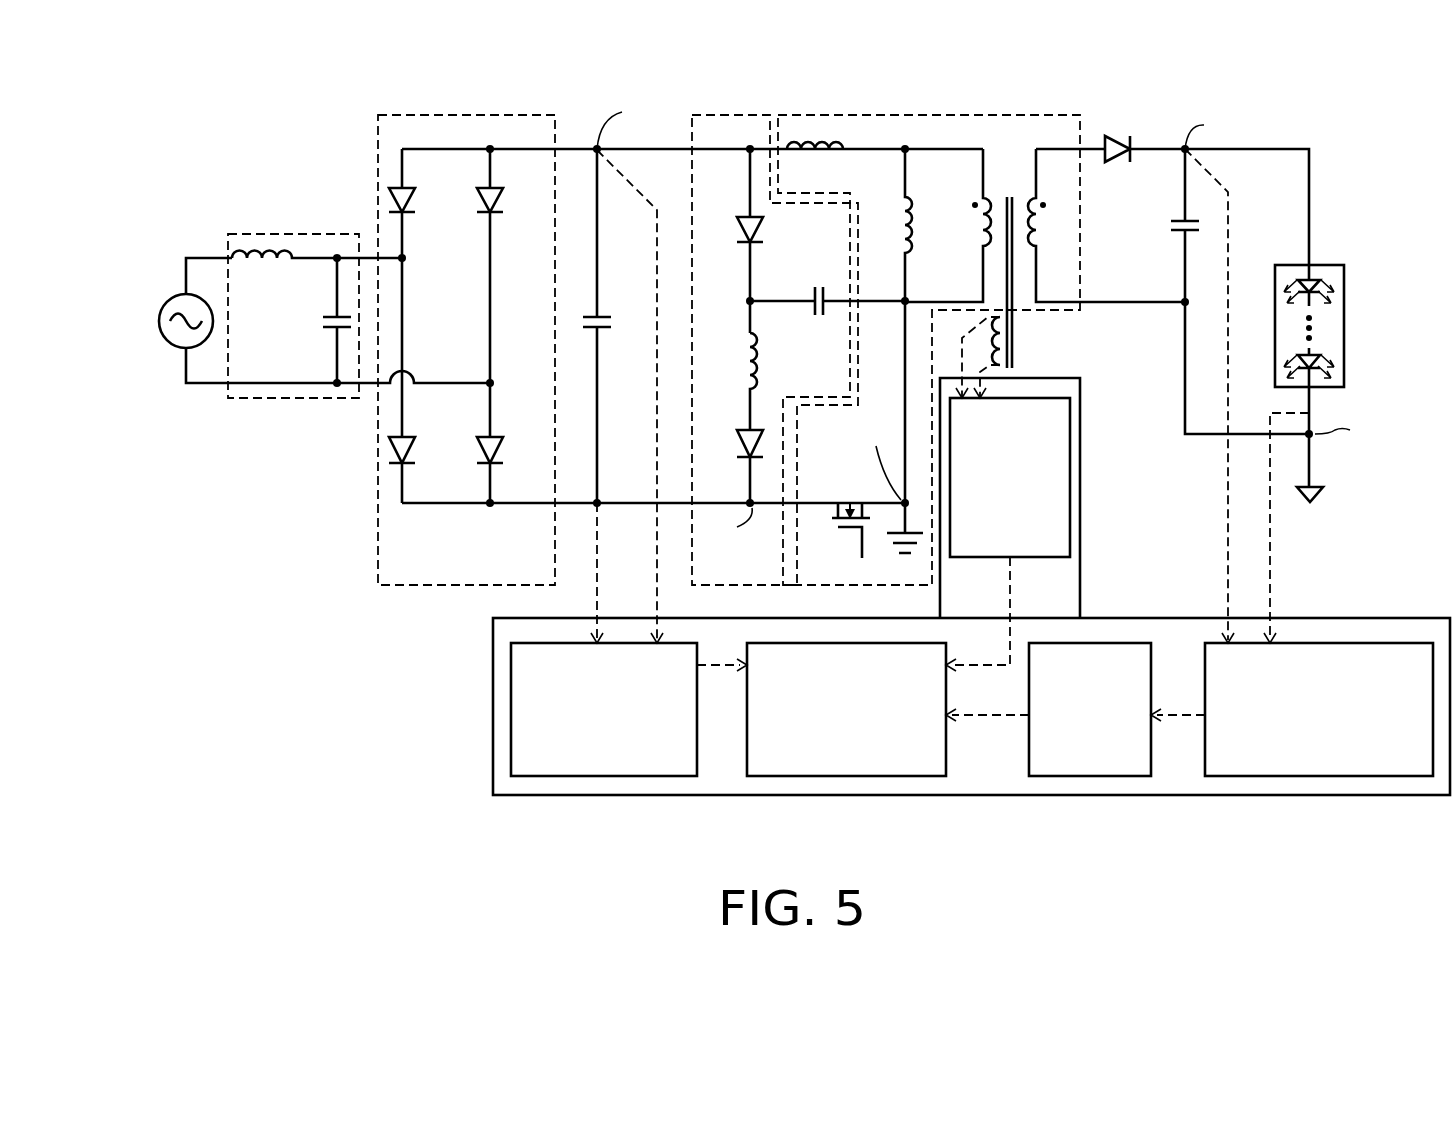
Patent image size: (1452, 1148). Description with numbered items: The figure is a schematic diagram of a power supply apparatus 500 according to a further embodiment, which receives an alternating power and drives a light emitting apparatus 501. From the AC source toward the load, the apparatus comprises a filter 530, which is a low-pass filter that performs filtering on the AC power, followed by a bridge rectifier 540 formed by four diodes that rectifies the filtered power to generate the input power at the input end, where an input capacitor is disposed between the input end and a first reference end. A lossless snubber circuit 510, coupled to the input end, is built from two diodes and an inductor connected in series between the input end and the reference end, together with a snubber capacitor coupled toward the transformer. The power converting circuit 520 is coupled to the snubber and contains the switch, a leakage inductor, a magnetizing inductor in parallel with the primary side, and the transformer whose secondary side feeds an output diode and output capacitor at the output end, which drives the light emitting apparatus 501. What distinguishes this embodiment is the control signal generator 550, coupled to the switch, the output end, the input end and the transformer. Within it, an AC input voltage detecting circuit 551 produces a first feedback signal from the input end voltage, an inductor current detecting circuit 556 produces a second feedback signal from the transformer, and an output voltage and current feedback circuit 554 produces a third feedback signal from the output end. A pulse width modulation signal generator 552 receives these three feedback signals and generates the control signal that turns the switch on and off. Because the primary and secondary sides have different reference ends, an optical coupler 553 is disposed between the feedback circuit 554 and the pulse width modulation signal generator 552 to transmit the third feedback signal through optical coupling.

The power supply apparatus 500 is at (783, 489).
The light emitting apparatus 501 is at (1335, 265).
The lossless snubber circuit 510 is at (737, 114).
The power converting circuit 520 is at (968, 114).
The filter 530 is at (292, 233).
The bridge rectifier 540 is at (490, 114).
The control signal generator 550 is at (971, 719).
The AC input voltage detecting circuit 551 is at (604, 776).
The pulse width modulation signal generator 552 is at (830, 776).
The optical coupler 553 is at (1088, 776).
The output voltage and current feedback circuit 554 is at (1296, 776).
The inductor current detecting circuit 556 is at (1080, 445).